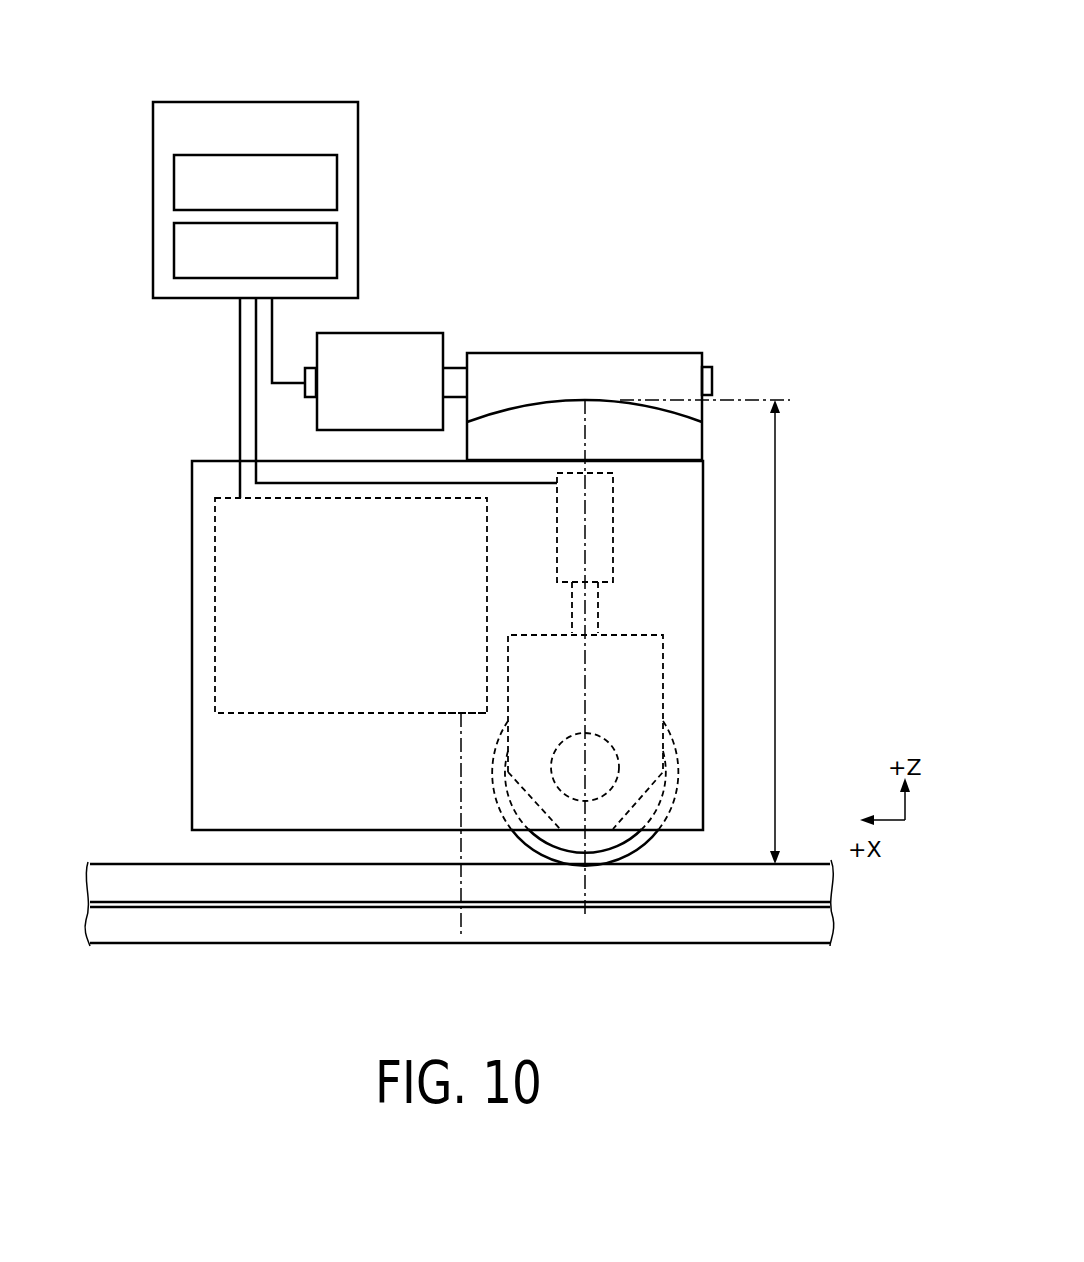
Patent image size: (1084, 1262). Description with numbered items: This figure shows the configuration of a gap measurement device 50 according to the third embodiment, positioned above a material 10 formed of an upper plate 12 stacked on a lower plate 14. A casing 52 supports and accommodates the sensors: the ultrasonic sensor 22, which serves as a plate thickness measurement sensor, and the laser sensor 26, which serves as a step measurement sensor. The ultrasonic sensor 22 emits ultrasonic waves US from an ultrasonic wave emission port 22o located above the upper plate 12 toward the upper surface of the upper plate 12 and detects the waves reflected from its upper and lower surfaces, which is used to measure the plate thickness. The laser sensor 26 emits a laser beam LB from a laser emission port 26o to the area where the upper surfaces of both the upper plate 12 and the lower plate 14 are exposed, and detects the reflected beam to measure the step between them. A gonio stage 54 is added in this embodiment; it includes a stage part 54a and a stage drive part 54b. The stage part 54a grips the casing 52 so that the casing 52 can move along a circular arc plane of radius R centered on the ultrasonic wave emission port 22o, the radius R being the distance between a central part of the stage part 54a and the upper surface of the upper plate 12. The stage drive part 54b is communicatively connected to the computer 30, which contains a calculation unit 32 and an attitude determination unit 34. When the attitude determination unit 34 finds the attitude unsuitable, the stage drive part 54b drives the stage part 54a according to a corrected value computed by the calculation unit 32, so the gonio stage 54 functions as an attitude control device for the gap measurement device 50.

The gap measurement device 50 is at (430, 60).
The computer 30 is at (358, 108).
The calculation unit 32 is at (337, 180).
The attitude determination unit 34 is at (337, 248).
The gonio stage 54 is at (508, 326).
The stage part 54a is at (550, 368).
The stage drive part 54b is at (425, 345).
The casing 52 is at (192, 468).
The laser sensor 26 is at (215, 603).
The laser emission port 26o is at (462, 713).
The ultrasonic sensor 22 is at (685, 822).
The ultrasonic wave emission port 22o is at (585, 864).
The ultrasonic waves US is at (585, 868).
The laser beam LB is at (461, 848).
The radius R is at (709, 632).
The material 10 is at (459, 888).
The upper plate 12 is at (113, 878).
The lower plate 14 is at (162, 928).